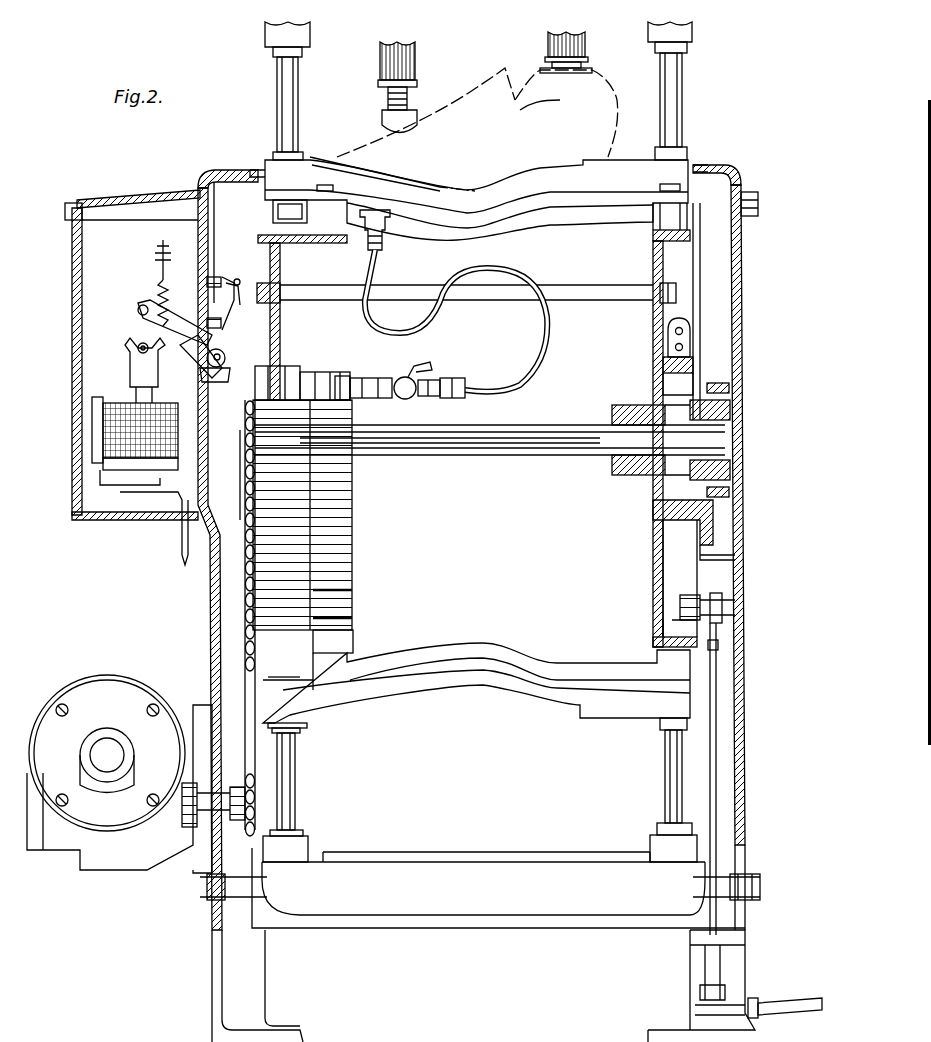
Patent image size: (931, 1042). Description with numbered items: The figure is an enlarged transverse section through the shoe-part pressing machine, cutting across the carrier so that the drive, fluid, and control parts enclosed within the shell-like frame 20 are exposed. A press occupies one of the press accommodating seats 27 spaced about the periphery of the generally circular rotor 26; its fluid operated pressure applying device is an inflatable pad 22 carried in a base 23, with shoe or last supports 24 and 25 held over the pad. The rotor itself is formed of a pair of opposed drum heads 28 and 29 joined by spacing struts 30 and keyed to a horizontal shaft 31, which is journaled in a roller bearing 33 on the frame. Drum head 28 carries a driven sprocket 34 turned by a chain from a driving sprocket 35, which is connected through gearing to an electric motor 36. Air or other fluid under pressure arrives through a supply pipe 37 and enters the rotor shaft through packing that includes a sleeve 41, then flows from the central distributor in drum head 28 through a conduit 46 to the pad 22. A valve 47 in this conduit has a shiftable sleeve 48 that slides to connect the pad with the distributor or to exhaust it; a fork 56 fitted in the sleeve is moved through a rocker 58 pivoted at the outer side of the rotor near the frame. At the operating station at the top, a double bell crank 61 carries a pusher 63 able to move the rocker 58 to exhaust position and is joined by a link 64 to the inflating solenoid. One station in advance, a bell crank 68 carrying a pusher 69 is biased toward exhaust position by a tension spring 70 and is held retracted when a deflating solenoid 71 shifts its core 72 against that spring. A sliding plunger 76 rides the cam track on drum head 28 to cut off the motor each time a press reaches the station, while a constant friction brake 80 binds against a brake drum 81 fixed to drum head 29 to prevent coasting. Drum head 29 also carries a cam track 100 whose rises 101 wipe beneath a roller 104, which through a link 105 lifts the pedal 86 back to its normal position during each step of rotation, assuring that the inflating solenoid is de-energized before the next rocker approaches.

The frame 20 is at (206, 186).
The inflatable pad 22 is at (315, 157).
The base 23 is at (520, 193).
The shoe or last support 24 is at (403, 63).
The shoe or last support 25 is at (575, 47).
The rotor 26 is at (642, 344).
The press accommodating seat 27 is at (383, 252).
The drum head 28 is at (327, 547).
The drum head 29 is at (655, 545).
The spacing strut 30 is at (577, 293).
The horizontal shaft 31 is at (543, 440).
The roller bearing 33 is at (713, 417).
The driven sprocket 34 is at (245, 577).
The driving sprocket 35 is at (250, 800).
The electric motor 36 is at (128, 700).
The supply pipe 37 is at (185, 552).
The sleeve 41 is at (355, 400).
The conduit 46 is at (495, 393).
The valve 47 is at (345, 380).
The shiftable sleeve 48 is at (404, 372).
The fork 56 is at (333, 373).
The rocker 58 is at (258, 283).
The double bell crank 61 is at (152, 303).
The pusher 63 is at (237, 282).
The link 64 is at (140, 323).
The bell crank 68 is at (186, 348).
The pusher 69 is at (228, 381).
The tension spring 70 is at (163, 280).
The deflating solenoid 71 is at (105, 432).
The core 72 is at (138, 368).
The sliding plunger 76 is at (240, 488).
The constant friction brake 80 is at (683, 358).
The brake drum 81 is at (678, 374).
The pedal 86 is at (805, 982).
The cam track 100 is at (677, 632).
The rise 101 is at (677, 613).
The roller 104 is at (687, 593).
The link 105 is at (712, 805).